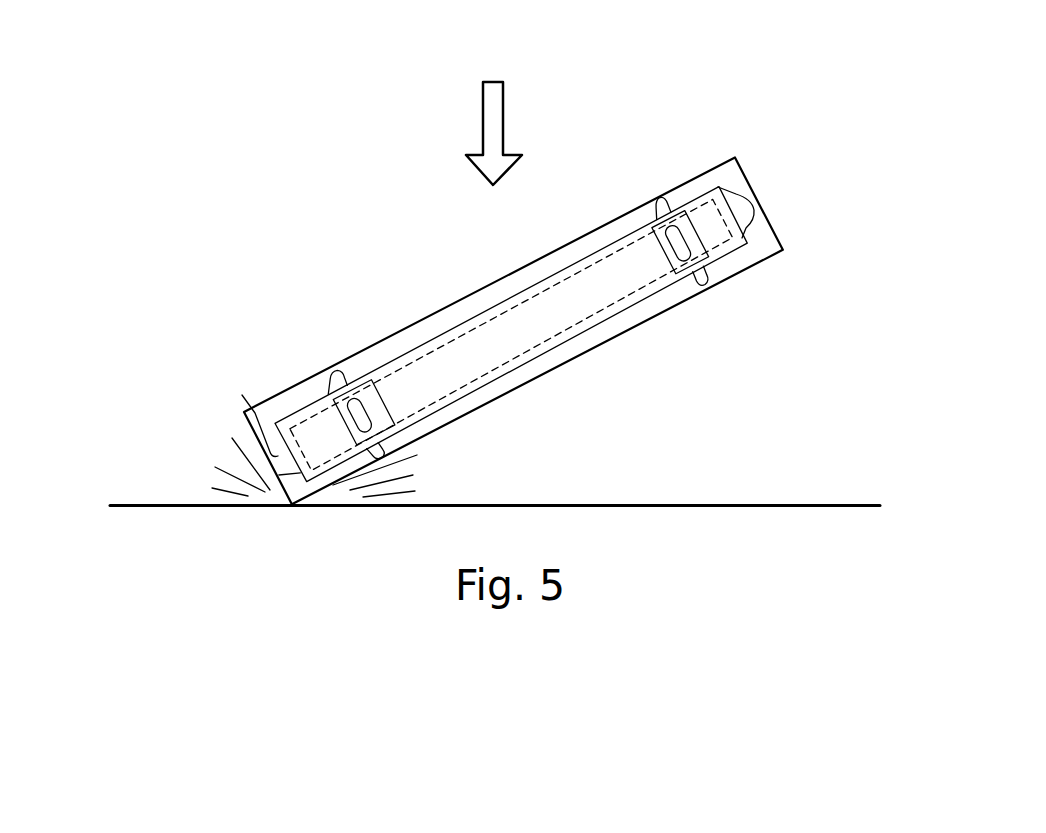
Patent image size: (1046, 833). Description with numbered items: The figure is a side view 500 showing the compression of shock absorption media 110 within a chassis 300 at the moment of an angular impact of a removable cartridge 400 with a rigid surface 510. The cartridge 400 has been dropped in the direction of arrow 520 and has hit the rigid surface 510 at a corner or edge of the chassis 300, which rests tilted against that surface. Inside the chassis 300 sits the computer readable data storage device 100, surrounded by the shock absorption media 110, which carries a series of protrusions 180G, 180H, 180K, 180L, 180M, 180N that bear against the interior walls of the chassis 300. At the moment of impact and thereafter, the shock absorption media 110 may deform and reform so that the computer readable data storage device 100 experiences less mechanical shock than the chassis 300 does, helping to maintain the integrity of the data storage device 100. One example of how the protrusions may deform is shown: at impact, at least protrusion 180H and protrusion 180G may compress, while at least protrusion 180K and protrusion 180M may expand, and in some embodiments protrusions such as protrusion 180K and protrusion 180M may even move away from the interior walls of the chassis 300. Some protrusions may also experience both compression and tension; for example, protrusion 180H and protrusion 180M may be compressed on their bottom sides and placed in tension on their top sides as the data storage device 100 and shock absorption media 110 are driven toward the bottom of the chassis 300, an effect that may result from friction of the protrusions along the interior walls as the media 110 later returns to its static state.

The computer readable data storage device 100 is at (600, 310).
The shock absorption media 110 is at (677, 296).
The protrusion 180G is at (388, 443).
The protrusion 180H is at (242, 395).
The protrusion 180K is at (330, 378).
The protrusion 180L is at (715, 287).
The protrusion 180M is at (732, 187).
The protrusion 180N is at (652, 201).
The chassis 300 is at (360, 345).
The removable cartridge 400 is at (440, 304).
The side view 500 is at (191, 183).
The rigid surface 510 is at (140, 505).
The arrow 520 is at (482, 133).